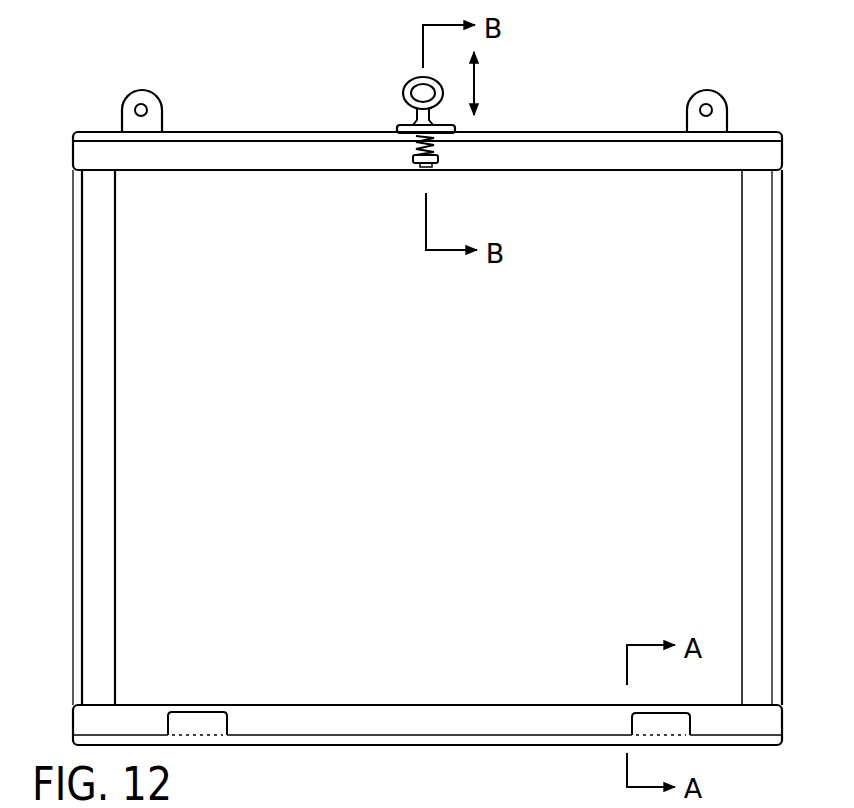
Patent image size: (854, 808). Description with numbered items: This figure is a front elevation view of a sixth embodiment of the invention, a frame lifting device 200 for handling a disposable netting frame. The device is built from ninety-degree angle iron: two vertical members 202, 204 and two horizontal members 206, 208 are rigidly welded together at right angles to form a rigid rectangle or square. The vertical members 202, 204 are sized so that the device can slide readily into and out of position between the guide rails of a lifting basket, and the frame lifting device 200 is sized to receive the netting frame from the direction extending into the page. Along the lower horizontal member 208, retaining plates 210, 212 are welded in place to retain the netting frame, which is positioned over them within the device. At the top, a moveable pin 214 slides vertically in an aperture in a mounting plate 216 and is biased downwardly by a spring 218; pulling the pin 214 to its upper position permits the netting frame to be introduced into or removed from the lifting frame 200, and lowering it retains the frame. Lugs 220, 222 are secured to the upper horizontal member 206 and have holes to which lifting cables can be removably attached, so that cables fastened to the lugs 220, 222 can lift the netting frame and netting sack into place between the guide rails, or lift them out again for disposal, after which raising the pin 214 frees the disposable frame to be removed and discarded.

The frame lifting device 200 is at (225, 97).
The vertical member 202 is at (103, 403).
The vertical member 204 is at (760, 395).
The horizontal member 206 is at (556, 130).
The horizontal member 208 is at (410, 707).
The retaining plate 210 is at (225, 725).
The retaining plate 212 is at (630, 727).
The moveable pin 214 is at (400, 83).
The mounting plate 216 is at (405, 127).
The spring 218 is at (441, 150).
The lug 220 is at (125, 97).
The lug 222 is at (726, 93).